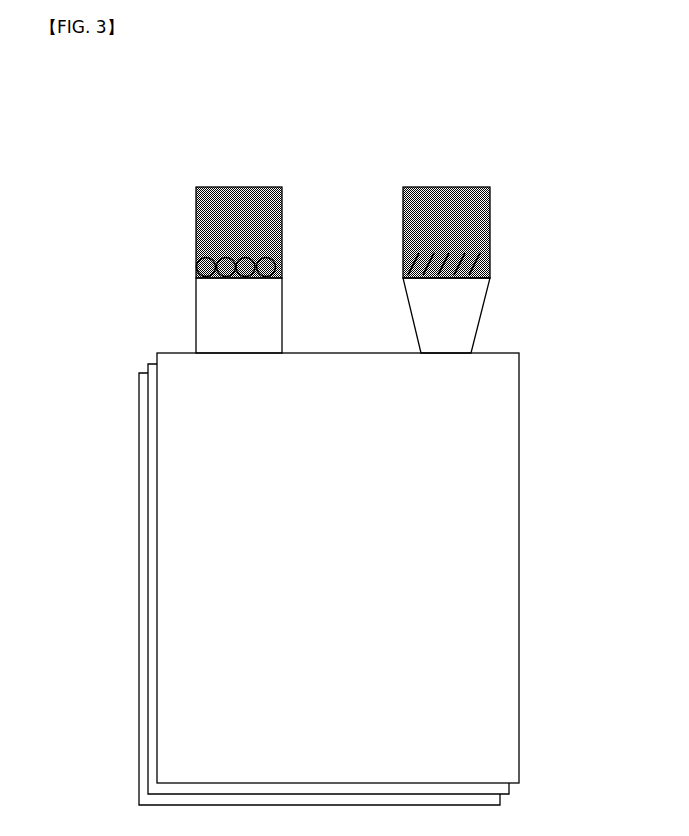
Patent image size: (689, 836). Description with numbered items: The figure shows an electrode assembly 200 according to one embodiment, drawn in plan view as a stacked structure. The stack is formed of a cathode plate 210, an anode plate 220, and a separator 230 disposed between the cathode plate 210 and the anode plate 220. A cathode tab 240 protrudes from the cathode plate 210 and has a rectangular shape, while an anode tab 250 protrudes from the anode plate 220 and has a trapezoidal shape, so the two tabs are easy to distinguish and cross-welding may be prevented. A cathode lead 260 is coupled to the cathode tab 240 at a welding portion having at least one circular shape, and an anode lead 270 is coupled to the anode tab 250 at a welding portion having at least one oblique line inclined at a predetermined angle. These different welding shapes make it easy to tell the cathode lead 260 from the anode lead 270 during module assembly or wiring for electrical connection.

The electrode assembly 200 is at (138, 143).
The cathode plate 210 is at (170, 523).
The anode plate 220 is at (143, 603).
The separator 230 is at (152, 565).
The cathode tab 240 is at (203, 302).
The anode tab 250 is at (473, 311).
The cathode lead 260 is at (205, 238).
The anode lead 270 is at (490, 235).